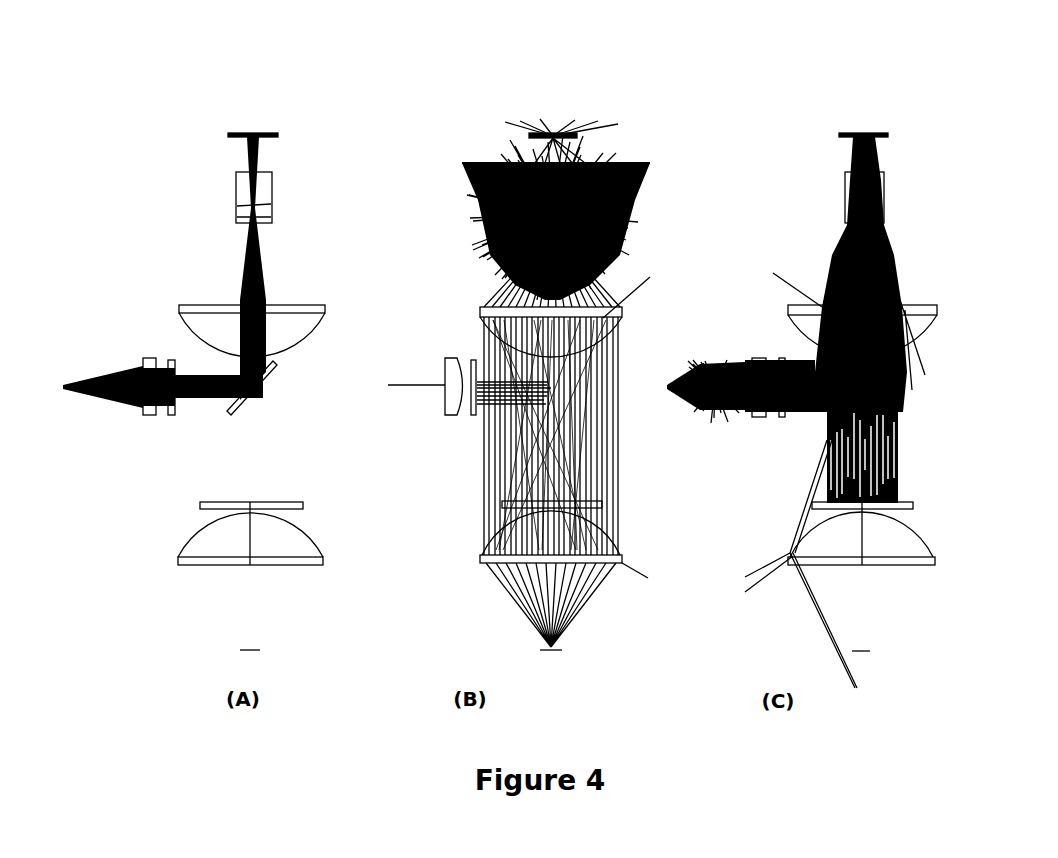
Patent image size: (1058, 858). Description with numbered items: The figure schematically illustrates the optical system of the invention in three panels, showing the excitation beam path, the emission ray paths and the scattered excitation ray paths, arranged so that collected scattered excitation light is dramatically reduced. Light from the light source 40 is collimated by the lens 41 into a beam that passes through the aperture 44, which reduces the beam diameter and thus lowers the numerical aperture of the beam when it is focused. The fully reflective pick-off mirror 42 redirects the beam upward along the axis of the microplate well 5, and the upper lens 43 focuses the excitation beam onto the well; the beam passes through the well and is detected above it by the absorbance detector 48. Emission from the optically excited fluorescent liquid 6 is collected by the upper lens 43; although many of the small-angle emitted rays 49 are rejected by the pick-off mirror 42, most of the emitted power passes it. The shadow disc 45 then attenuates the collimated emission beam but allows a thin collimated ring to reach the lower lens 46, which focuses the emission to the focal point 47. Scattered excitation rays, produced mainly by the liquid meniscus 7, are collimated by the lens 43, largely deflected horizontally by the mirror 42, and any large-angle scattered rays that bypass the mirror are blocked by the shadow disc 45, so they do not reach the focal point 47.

The absorbance detector 48 is at (258, 132).
The microplate well 5 is at (272, 180).
The liquid meniscus 7 is at (248, 207).
The optically excited fluorescent liquid 6 is at (268, 213).
The light source 40 is at (78, 378).
The lens 41 is at (140, 357).
The pick-off mirror 42 is at (268, 378).
The lens 43 is at (289, 305).
The aperture 44 is at (172, 418).
The shadow disc 45 is at (604, 504).
The lower lens 46 is at (622, 548).
The focal point 47 is at (558, 643).
The small-angle emitted rays 49 is at (620, 207).